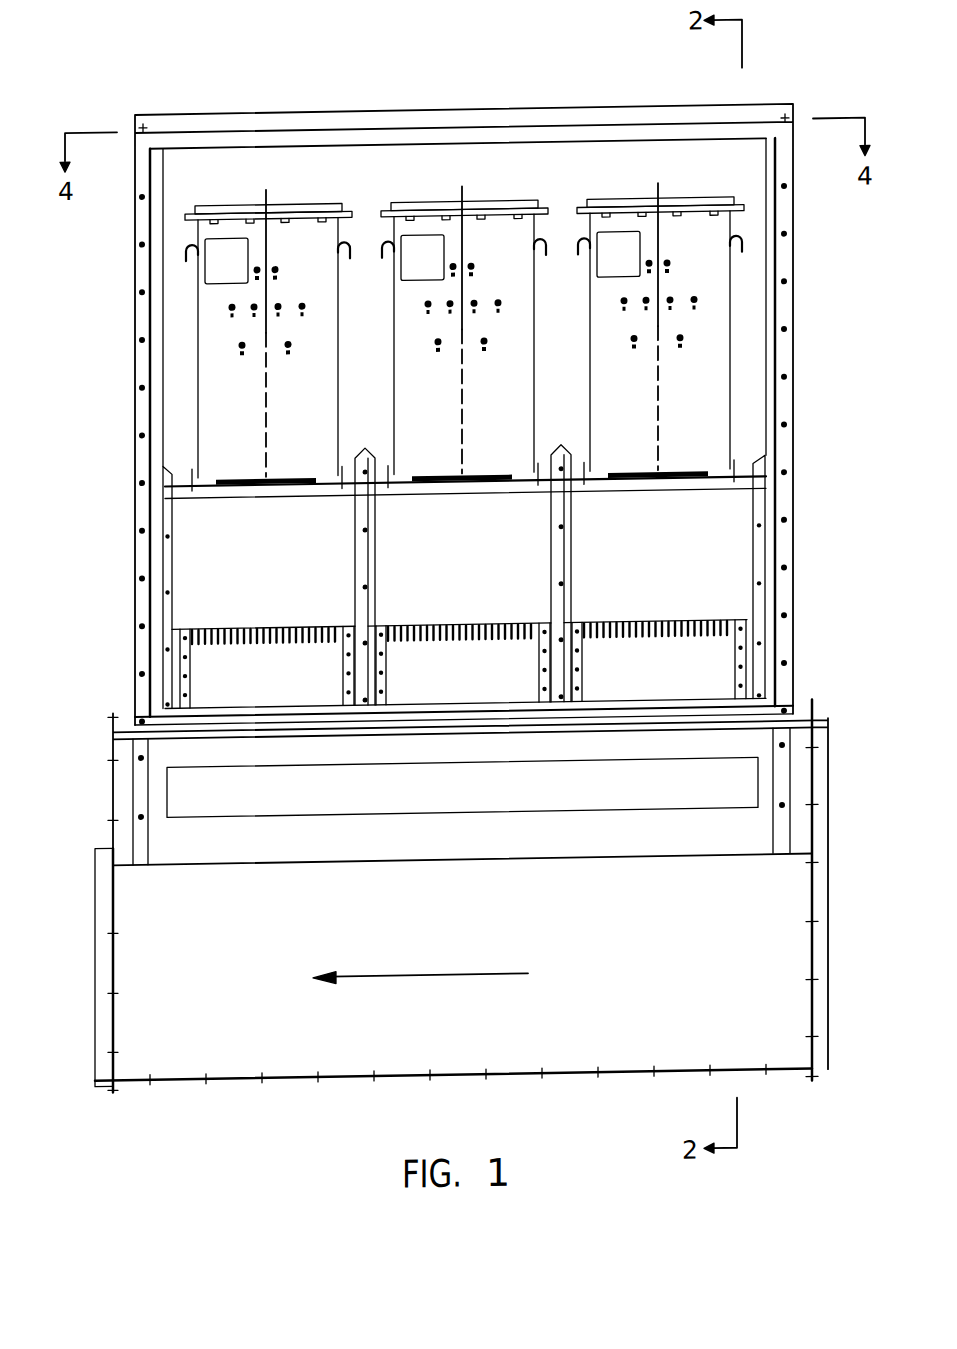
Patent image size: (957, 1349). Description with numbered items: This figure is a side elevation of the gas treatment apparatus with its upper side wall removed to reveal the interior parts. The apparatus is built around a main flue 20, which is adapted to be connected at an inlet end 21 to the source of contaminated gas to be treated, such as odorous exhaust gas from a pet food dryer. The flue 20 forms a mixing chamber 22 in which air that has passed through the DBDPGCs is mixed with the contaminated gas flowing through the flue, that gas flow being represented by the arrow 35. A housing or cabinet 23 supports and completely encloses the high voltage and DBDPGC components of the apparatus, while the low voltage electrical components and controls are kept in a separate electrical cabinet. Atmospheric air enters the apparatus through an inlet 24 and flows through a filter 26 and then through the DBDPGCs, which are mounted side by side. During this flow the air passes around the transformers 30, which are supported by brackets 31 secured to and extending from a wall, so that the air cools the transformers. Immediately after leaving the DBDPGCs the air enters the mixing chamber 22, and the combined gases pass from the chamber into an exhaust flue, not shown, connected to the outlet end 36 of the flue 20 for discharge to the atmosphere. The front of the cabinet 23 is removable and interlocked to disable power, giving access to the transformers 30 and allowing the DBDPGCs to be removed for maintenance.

The main flue 20 is at (340, 1084).
The inlet end 21 is at (832, 827).
The mixing chamber 22 is at (722, 971).
The housing or cabinet 23 is at (135, 432).
The inlet 24 is at (336, 872).
The filter 26 is at (560, 788).
The transformers 30 is at (455, 211).
The brackets 31 is at (745, 497).
The arrow 35 is at (491, 990).
The outlet end 36 is at (95, 920).